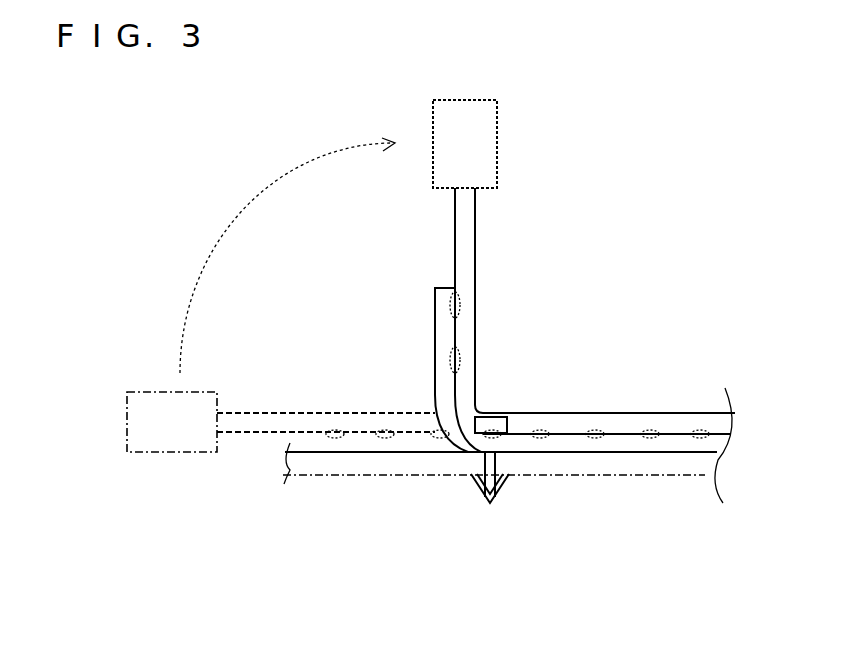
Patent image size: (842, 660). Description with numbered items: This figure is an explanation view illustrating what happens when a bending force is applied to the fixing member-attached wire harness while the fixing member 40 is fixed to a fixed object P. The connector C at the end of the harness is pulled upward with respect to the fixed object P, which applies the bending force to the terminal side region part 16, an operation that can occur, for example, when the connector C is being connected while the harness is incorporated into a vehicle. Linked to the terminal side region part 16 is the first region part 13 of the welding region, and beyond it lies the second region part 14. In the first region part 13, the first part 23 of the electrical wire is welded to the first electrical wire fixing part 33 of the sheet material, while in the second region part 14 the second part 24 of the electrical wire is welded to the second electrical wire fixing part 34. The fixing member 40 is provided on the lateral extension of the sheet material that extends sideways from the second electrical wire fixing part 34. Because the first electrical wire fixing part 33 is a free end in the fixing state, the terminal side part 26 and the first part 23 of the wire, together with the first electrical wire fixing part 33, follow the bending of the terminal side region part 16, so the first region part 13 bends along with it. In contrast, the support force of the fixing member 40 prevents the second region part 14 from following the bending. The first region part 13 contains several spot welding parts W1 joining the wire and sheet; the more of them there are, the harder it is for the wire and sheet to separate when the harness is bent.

The connector C is at (488, 140).
The terminal side region part 16 is at (480, 245).
The terminal side part 26 is at (462, 257).
The first region part 13 is at (480, 336).
The spot welding part W1 is at (465, 307).
The first electrical wire fixing part 33 is at (442, 334).
The first part 23 is at (467, 372).
The second region part 14 is at (623, 410).
The second part 24 is at (675, 420).
The second electrical wire fixing part 34 is at (668, 445).
The fixed object P is at (598, 478).
The fixing member 40 is at (487, 508).